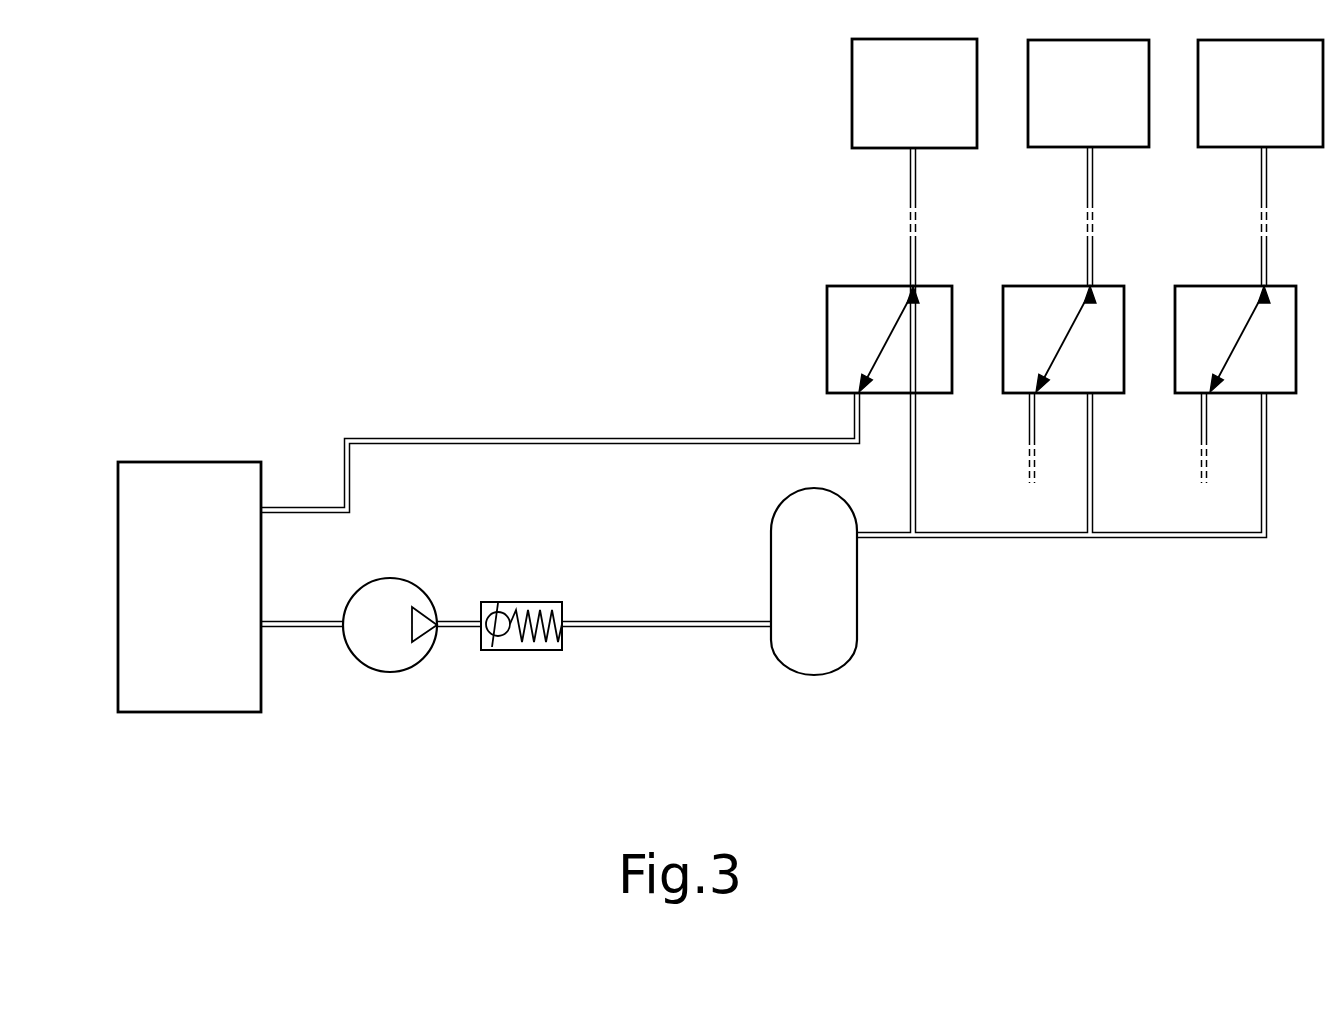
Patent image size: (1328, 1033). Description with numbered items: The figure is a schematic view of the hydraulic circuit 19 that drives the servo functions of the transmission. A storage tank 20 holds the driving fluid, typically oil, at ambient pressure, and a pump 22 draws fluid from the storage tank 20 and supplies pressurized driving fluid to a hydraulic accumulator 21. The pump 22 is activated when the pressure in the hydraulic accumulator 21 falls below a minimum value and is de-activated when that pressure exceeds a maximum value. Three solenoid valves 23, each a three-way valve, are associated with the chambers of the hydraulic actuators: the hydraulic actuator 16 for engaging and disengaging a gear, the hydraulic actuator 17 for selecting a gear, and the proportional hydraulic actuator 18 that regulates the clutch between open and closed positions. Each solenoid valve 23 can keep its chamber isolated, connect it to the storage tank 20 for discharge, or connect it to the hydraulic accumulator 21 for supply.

The hydraulic actuator 16 is at (914, 93).
The hydraulic actuator 17 is at (1088, 93).
The proportional hydraulic actuator 18 is at (1260, 93).
The hydraulic circuit 19 is at (507, 351).
The storage tank 20 is at (152, 477).
The hydraulic accumulator 21 is at (835, 613).
The pump 22 is at (393, 657).
The three-way solenoid valve 23 is at (835, 332).